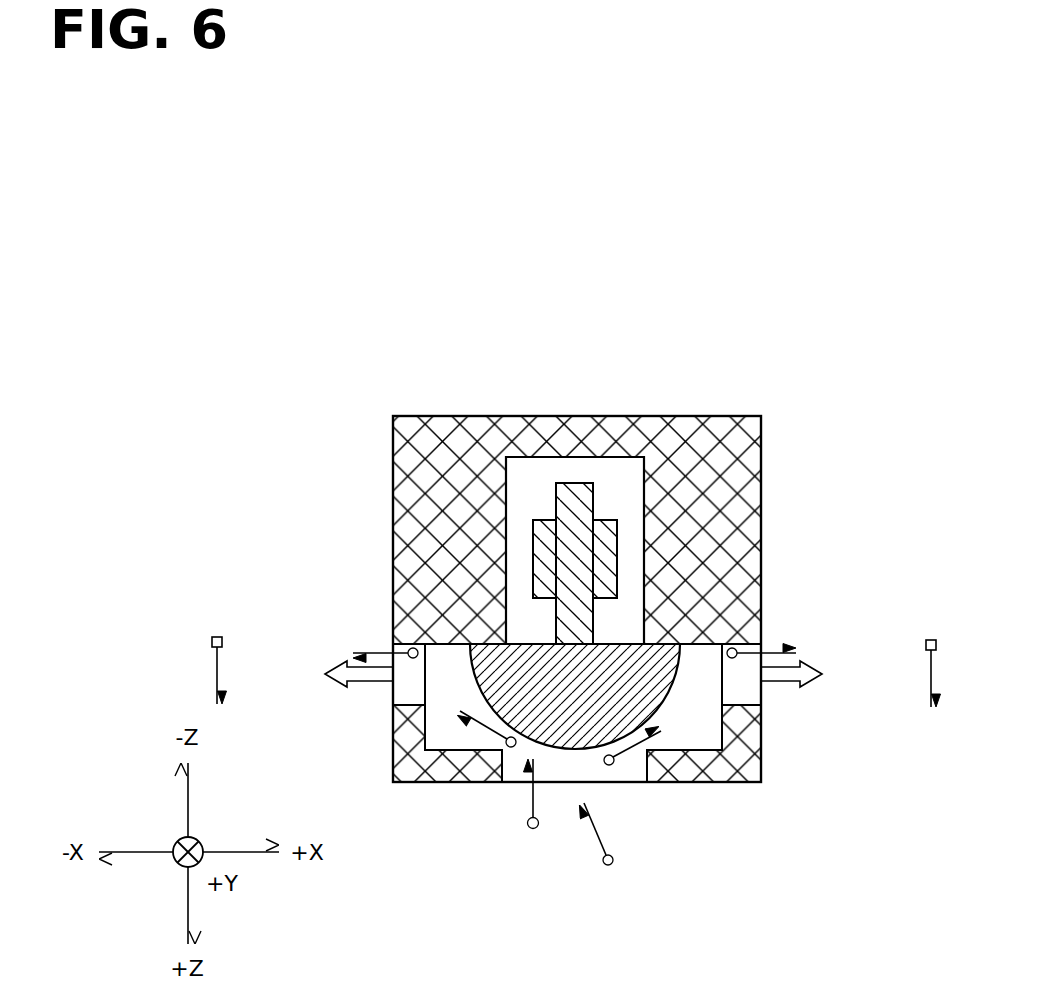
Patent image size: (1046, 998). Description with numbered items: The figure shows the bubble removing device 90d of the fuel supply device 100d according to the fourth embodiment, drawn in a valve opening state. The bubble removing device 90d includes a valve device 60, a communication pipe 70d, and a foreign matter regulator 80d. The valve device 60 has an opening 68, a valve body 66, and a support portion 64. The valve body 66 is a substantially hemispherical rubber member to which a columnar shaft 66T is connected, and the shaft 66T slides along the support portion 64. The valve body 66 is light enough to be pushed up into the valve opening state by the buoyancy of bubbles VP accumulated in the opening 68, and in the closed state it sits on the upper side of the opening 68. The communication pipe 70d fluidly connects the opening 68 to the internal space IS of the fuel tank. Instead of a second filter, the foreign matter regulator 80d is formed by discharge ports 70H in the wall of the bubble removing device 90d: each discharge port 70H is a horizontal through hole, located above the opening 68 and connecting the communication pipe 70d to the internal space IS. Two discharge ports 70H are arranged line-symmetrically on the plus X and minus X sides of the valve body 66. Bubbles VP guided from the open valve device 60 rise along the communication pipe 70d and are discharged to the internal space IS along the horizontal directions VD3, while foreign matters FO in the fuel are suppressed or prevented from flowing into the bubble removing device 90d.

The fuel supply device 100d is at (846, 424).
The bubble removing device 90d is at (803, 477).
The valve device 60 is at (634, 551).
The shaft 66T is at (574, 482).
The support portion 64 is at (542, 540).
The valve body 66 is at (490, 644).
The opening 68 is at (510, 782).
The discharge ports 70H is at (393, 698).
The foreign matter regulator 80d is at (748, 692).
The communication pipe 70d is at (692, 740).
The bubbles VP is at (605, 870).
The direction of the discharge ports VD3 is at (574, 674).
The foreign matters FO is at (217, 637).
The internal space IS is at (141, 447).